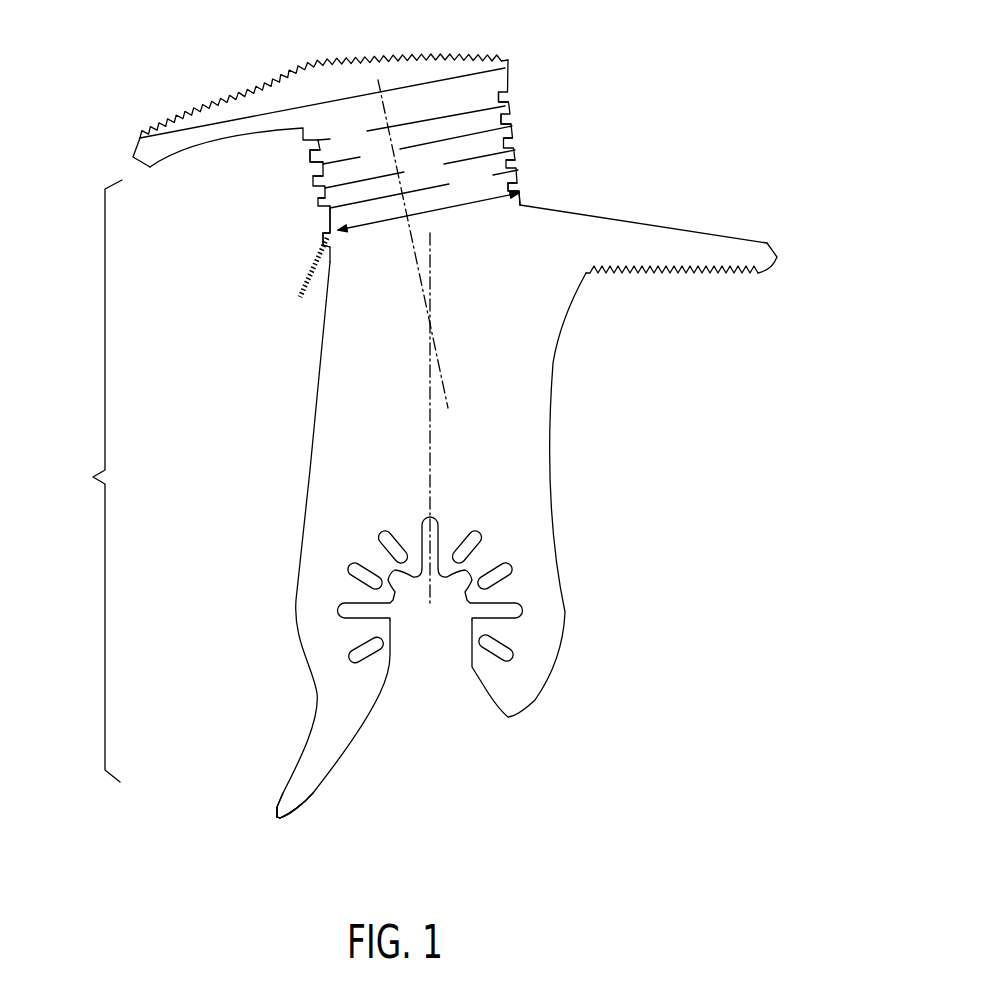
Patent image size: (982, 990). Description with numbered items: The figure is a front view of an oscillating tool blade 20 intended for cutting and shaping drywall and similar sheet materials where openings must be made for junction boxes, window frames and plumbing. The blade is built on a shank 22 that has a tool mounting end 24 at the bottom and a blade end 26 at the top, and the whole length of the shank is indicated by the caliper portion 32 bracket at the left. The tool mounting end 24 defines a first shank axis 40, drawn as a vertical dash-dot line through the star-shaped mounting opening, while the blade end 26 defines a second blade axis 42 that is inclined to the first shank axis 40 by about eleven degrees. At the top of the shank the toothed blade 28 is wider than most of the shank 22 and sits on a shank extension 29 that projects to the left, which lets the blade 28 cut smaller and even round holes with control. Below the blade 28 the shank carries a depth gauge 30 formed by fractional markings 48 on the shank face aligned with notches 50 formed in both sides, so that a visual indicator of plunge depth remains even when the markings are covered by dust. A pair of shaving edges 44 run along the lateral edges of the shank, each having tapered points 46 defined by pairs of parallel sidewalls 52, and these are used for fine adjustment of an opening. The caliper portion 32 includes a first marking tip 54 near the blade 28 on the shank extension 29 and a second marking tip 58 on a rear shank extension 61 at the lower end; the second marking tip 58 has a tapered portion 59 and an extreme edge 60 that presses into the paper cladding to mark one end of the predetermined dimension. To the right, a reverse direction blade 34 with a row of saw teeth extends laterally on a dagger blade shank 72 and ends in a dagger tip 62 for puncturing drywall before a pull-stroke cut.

The oscillating tool blade 20 is at (660, 85).
The shank 22 is at (578, 397).
The tool mounting end 24 is at (533, 523).
The blade end 26 is at (360, 347).
The blade 28 is at (311, 62).
The shank extension 29 is at (194, 142).
The depth gauge 30 is at (306, 197).
The caliper portion 32 is at (89, 481).
The reverse direction blade 34 is at (705, 284).
The first shank axis 40 is at (432, 418).
The second blade axis 42 is at (420, 285).
The shaving edge 44 is at (316, 250).
The tapered points 46 is at (317, 196).
The markings 48 is at (403, 120).
The notches 50 is at (323, 186).
The parallel sidewalls 52 is at (306, 282).
The first marking tip 54 is at (132, 157).
The second marking tip 58 is at (273, 817).
The tapered portion 59 is at (278, 821).
The extreme edge 60 is at (281, 821).
The rear shank extension 61 is at (355, 743).
The dagger tip 62 is at (777, 257).
The dagger blade shank 72 is at (628, 237).